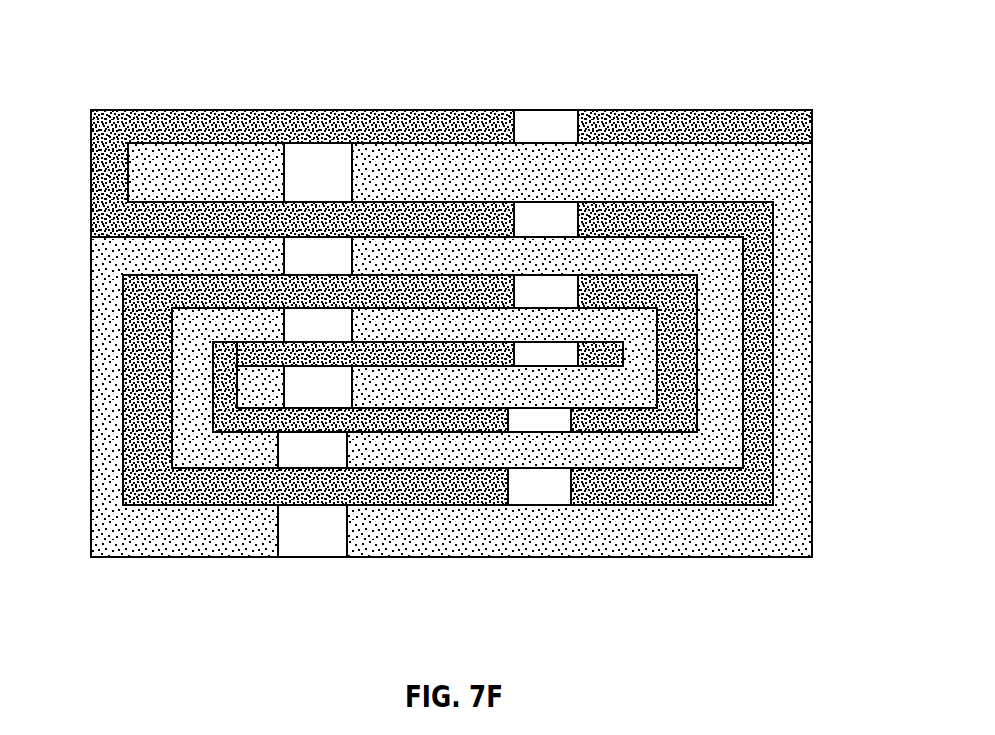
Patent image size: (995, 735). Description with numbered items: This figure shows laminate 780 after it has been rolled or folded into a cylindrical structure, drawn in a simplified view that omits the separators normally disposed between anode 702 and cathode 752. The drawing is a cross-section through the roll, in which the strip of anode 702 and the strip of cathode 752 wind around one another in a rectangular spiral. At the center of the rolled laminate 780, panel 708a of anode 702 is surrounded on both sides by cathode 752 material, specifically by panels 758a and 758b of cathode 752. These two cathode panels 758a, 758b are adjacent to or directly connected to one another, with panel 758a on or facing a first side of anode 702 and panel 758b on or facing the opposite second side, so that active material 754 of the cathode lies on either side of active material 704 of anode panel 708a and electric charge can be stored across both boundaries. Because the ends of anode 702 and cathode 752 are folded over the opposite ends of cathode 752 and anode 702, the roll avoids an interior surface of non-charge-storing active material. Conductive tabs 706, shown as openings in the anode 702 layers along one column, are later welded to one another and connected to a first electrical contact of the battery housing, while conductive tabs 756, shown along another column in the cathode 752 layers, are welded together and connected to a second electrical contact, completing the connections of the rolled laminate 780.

The laminate 780 is at (137, 68).
The anode 702 is at (802, 125).
The active material of anode 704 is at (737, 109).
The cathode 752 is at (795, 177).
The active material of cathode 754 is at (798, 268).
The conductive tabs 756 is at (305, 165).
The conductive tabs 706 is at (527, 353).
The panel of cathode 758a is at (408, 393).
The panel of cathode 758b is at (387, 327).
The panel of anode 708a is at (432, 342).